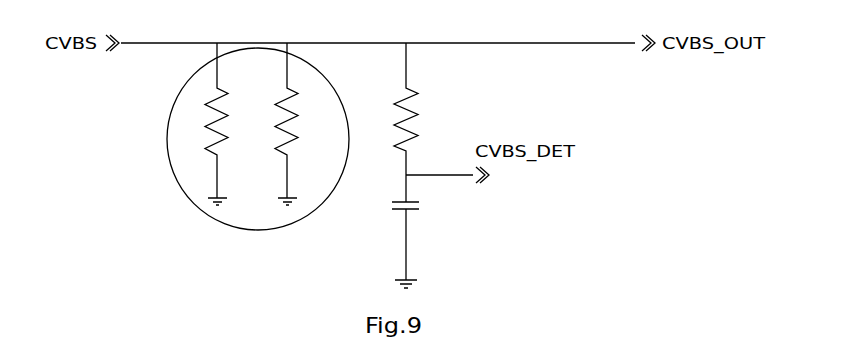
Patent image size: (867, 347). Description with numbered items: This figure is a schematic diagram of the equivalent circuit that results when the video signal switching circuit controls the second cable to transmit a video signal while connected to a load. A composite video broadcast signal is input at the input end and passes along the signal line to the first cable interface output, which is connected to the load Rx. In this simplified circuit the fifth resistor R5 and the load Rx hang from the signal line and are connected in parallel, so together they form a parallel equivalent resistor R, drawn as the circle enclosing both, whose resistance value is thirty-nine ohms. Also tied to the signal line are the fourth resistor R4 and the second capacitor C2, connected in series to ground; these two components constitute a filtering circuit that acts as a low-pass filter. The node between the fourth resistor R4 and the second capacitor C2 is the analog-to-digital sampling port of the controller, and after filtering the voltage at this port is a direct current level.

The parallel equivalent resistor R is at (243, 139).
The fifth resistor R5 is at (232, 124).
The load Rx is at (304, 124).
The fourth resistor R4 is at (423, 109).
The second capacitor C2 is at (424, 231).